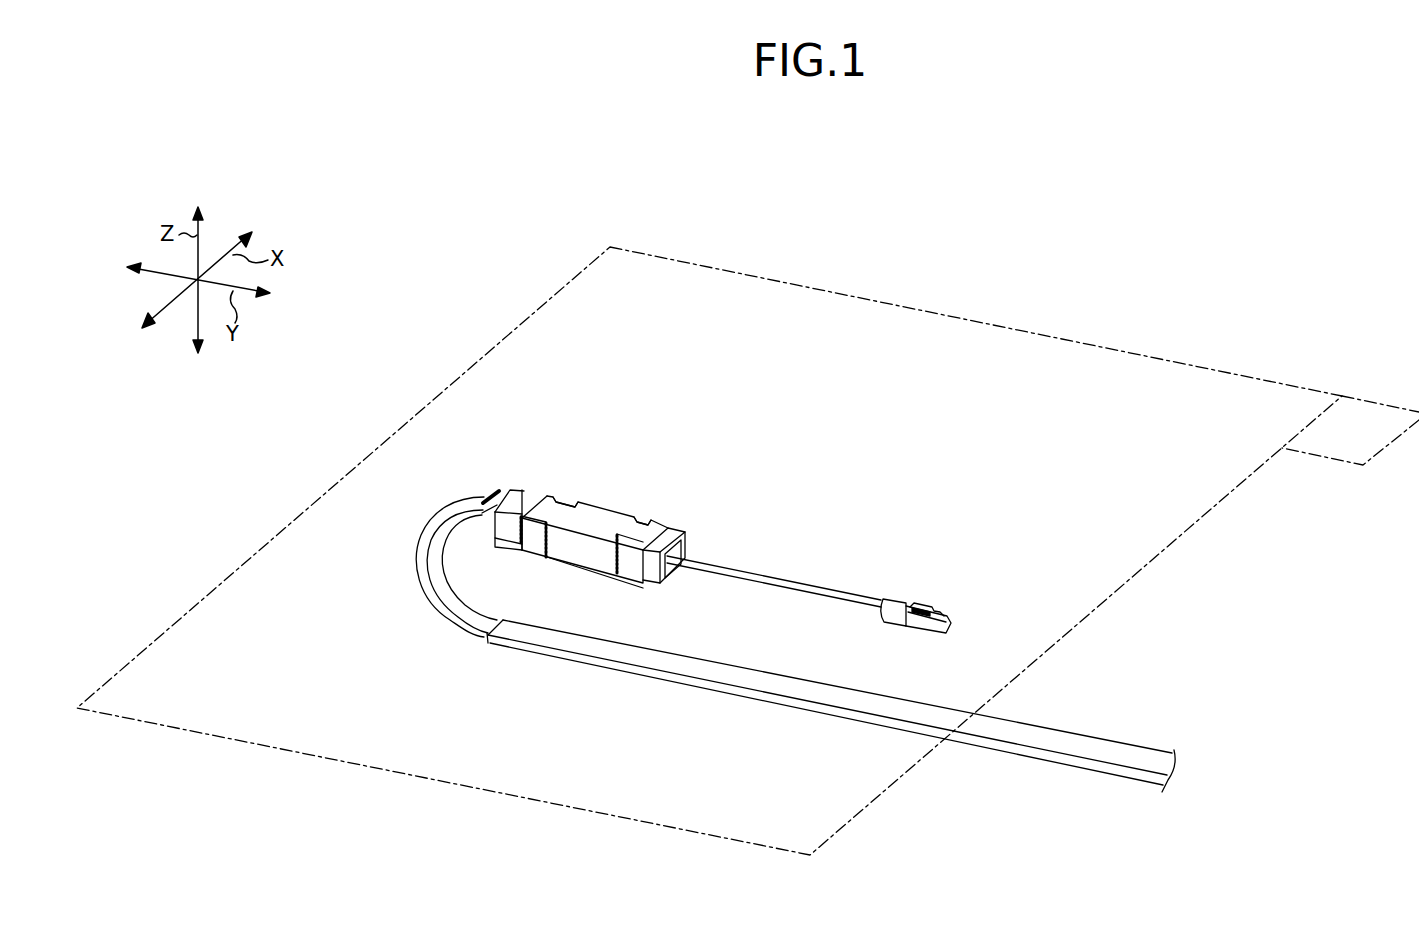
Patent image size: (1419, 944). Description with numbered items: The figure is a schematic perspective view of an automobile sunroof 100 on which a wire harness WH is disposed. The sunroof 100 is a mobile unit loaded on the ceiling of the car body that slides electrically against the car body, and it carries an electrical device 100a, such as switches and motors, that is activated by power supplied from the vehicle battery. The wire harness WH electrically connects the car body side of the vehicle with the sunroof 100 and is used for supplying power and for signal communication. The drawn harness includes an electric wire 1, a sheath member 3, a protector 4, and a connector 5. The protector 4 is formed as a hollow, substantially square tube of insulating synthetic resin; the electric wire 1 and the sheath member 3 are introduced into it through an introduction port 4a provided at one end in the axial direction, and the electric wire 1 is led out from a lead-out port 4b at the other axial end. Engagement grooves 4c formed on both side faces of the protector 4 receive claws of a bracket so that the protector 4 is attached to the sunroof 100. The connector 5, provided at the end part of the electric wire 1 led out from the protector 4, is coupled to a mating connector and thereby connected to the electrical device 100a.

The sunroof 100 is at (1069, 341).
The electrical device 100a is at (1369, 400).
The wire harness WH is at (770, 476).
The electric wire 1 is at (796, 582).
The sheath member 3 is at (548, 652).
The protector 4 is at (597, 502).
The introduction port 4a is at (496, 496).
The lead-out port 4b is at (683, 548).
The engagement groove 4c is at (531, 508).
The connector 5 is at (904, 600).